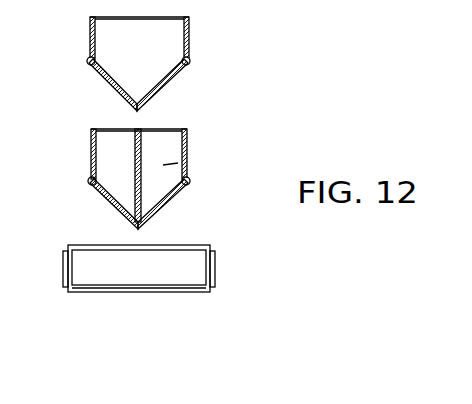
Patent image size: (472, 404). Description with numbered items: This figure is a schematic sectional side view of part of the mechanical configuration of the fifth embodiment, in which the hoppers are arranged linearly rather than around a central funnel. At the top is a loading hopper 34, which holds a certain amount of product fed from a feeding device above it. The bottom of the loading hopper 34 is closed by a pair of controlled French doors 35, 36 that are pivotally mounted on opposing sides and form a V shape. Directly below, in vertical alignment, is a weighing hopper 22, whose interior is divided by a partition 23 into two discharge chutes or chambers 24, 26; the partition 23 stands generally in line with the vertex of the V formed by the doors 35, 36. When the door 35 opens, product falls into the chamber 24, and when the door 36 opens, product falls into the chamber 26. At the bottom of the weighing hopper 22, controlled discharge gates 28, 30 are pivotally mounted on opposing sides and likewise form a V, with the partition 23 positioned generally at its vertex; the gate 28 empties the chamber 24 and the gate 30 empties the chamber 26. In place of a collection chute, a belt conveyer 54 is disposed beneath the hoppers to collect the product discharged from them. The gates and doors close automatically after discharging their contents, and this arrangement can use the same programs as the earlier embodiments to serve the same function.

The weighing hopper 22 is at (188, 142).
The partition 23 is at (142, 160).
The chamber 24 is at (112, 160).
The chamber 26 is at (163, 165).
The discharge gate 28 is at (110, 203).
The discharge gate 30 is at (167, 204).
The loading hopper 34 is at (190, 37).
The French door 35 is at (110, 89).
The French door 36 is at (167, 88).
The belt conveyer 54 is at (139, 293).